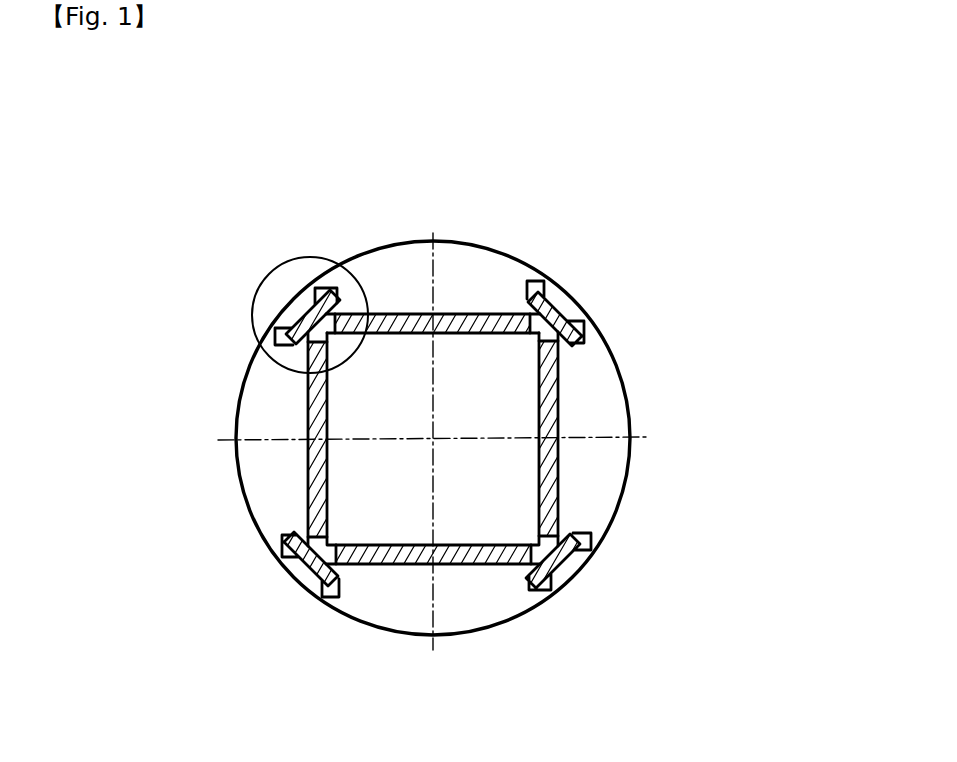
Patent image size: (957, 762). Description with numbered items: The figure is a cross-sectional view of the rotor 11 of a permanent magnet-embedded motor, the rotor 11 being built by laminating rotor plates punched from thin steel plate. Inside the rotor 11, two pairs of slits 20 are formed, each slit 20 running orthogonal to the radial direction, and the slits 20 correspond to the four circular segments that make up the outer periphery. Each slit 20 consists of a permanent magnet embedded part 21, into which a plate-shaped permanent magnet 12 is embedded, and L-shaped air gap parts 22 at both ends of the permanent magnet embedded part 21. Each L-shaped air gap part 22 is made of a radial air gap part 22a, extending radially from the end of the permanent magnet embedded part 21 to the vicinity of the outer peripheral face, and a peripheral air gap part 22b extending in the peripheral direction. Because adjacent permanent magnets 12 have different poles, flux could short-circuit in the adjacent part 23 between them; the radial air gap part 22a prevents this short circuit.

The rotor 11 is at (597, 388).
The permanent magnet 12 is at (487, 301).
The slit 20 is at (448, 335).
The permanent magnet embedded part 21 is at (473, 334).
The L-shaped air gap part 22 is at (359, 333).
The radial air gap part 22a is at (337, 301).
The peripheral air gap part 22b is at (314, 219).
The adjacent part 23 is at (273, 288).